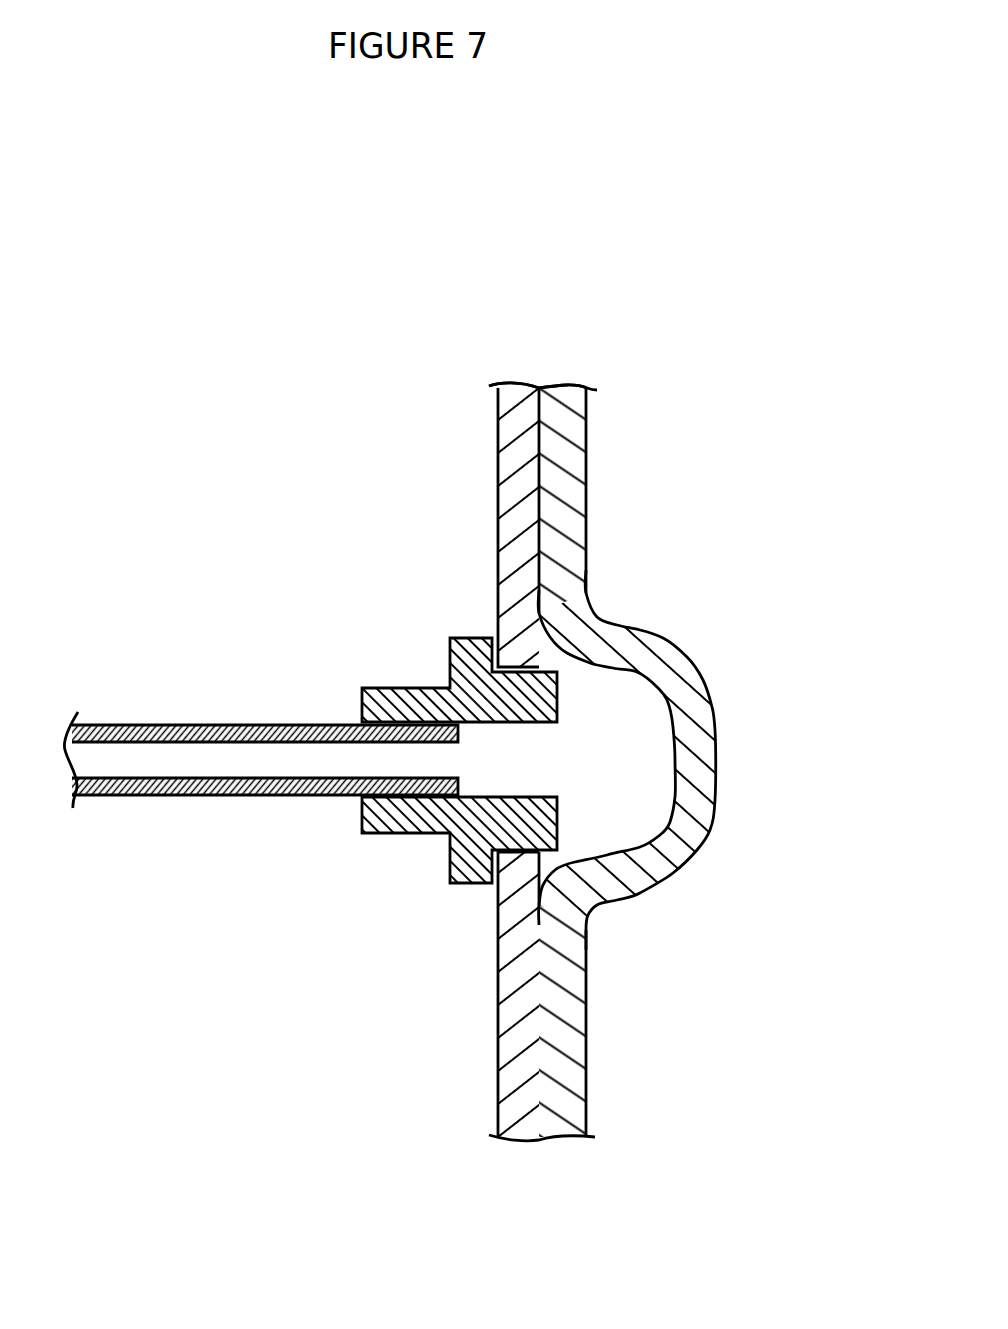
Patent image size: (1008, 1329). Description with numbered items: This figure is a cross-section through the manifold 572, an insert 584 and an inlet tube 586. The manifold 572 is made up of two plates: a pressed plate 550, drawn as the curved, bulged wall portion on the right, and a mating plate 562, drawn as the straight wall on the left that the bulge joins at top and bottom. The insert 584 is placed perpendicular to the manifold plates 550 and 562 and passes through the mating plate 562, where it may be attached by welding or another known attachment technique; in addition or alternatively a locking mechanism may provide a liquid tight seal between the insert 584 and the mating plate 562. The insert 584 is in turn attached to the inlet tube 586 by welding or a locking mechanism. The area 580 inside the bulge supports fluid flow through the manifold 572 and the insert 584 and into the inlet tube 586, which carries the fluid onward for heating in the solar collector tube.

The pressed plate 550 is at (695, 703).
The mating plate 562 is at (505, 1050).
The manifold 572 is at (546, 388).
The area 580 is at (600, 730).
The insert 584 is at (450, 853).
The inlet tube 586 is at (148, 790).